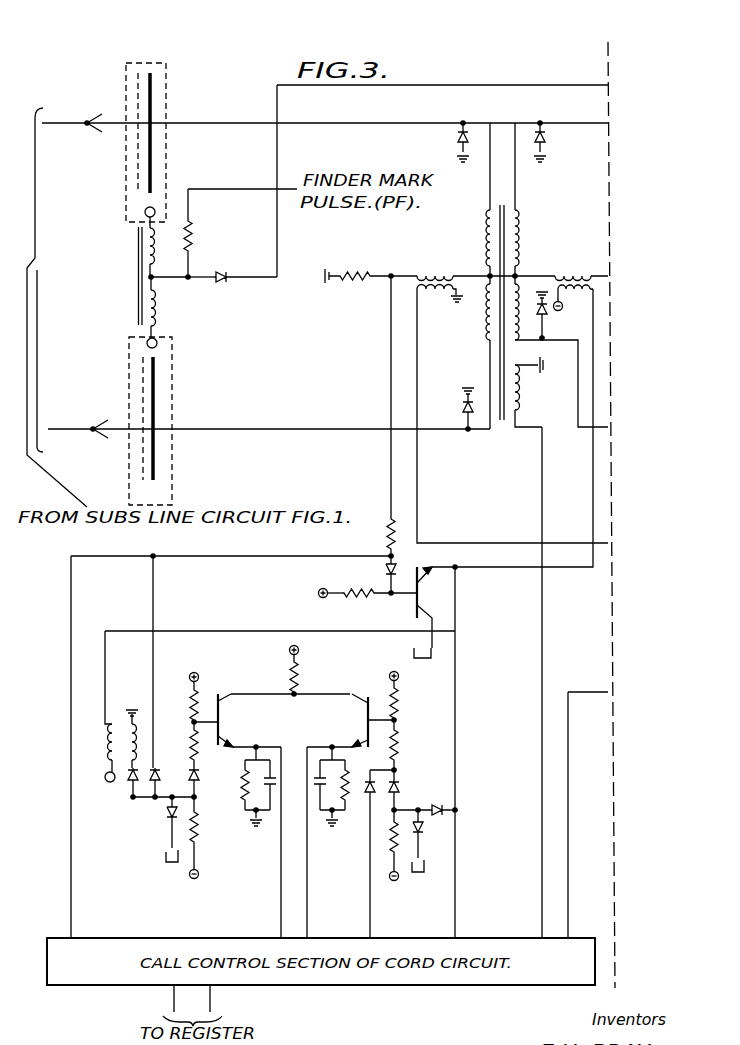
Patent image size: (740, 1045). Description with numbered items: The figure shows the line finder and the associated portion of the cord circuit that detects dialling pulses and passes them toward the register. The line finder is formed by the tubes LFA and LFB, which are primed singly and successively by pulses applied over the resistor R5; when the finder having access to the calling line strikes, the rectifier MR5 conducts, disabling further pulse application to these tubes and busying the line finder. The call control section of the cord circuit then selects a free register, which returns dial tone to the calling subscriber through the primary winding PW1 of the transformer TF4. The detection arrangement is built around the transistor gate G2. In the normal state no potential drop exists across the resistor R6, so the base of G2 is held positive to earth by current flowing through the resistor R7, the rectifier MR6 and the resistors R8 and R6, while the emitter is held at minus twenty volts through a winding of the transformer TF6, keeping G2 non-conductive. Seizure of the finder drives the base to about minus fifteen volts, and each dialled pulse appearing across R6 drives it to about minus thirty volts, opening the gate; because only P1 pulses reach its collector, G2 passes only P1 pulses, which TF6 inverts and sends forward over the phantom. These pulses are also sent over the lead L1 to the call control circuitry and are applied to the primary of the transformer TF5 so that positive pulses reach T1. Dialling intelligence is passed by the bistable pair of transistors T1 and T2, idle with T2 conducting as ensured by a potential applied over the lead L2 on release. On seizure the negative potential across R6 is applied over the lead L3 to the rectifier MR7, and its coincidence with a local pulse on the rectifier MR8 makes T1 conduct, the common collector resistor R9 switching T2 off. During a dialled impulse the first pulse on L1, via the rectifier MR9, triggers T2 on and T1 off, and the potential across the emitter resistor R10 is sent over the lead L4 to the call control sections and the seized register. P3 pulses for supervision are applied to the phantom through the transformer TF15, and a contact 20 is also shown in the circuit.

The line finder tube LFA is at (157, 184).
The line finder tube LFB is at (166, 391).
The resistor R5 is at (240, 234).
The rectifier MR5 is at (232, 286).
The transformer TF4 is at (530, 262).
The transformer TF15 is at (440, 276).
The resistor R6 is at (371, 283).
The transformer TF6 is at (581, 281).
The rectifier / contact 20 is at (331, 541).
The primary winding PW1 is at (536, 392).
The resistor R8 is at (376, 538).
The rectifier MR6 is at (386, 580).
The resistor R7 is at (368, 603).
The transistor gate G2 is at (437, 606).
The P1 pulse P1 is at (309, 774).
The lead L3 is at (151, 584).
The transformer TF5 is at (122, 728).
The rectifier MR7 is at (147, 781).
The rectifier MR8 is at (171, 820).
The transistor T1 is at (249, 720).
The common collector resistor R9 is at (307, 671).
The transistor T2 is at (350, 720).
The emitter resistor R10 is at (346, 785).
The rectifier MR9 is at (441, 804).
The lead L1 is at (455, 752).
The lead L2 is at (371, 872).
The lead L4 is at (311, 890).